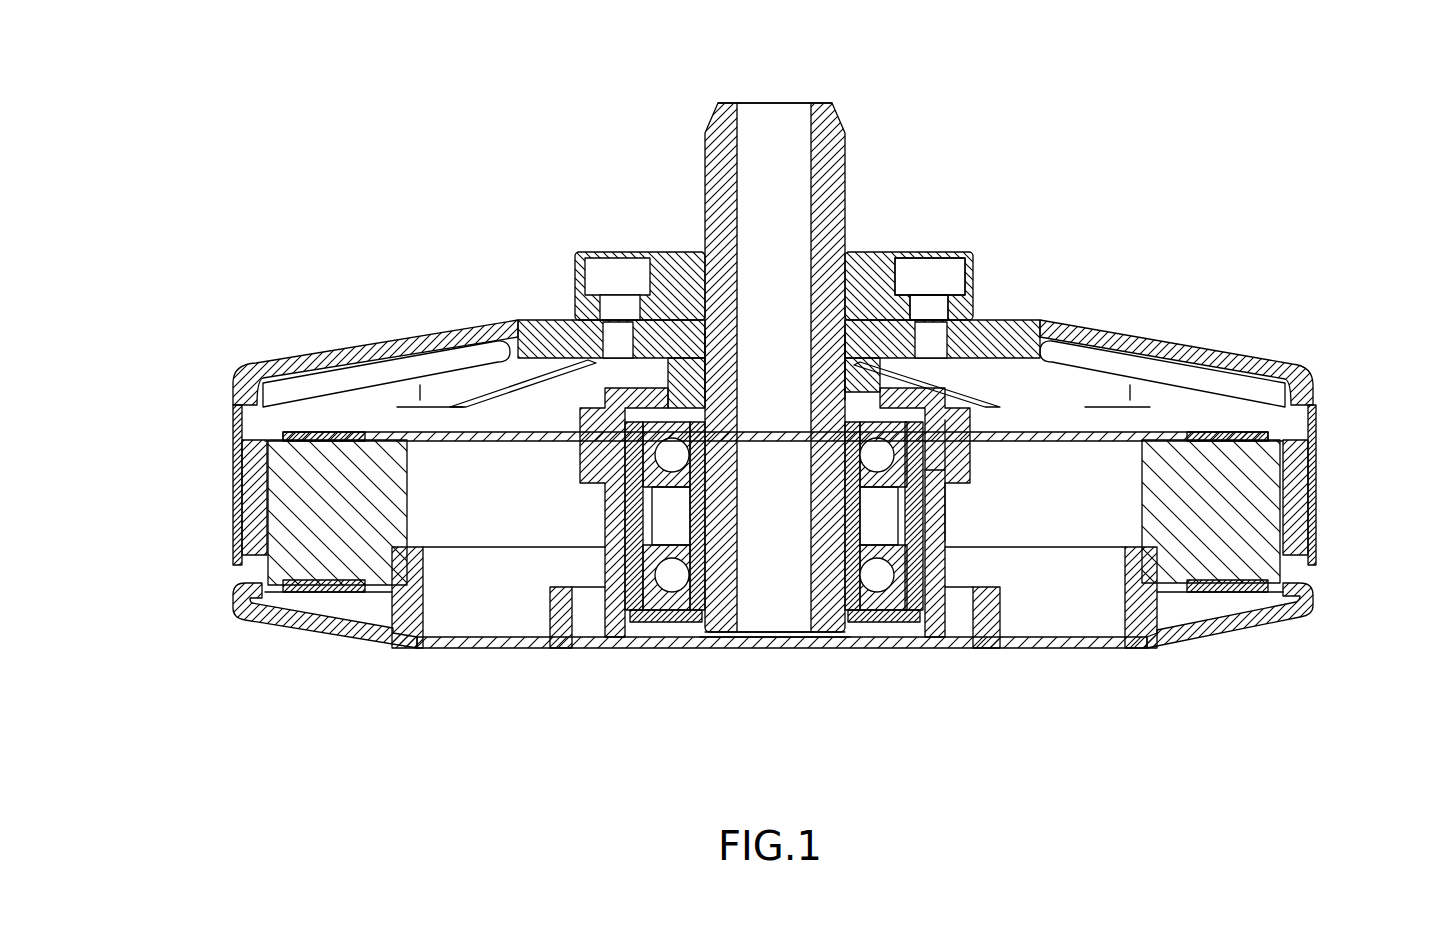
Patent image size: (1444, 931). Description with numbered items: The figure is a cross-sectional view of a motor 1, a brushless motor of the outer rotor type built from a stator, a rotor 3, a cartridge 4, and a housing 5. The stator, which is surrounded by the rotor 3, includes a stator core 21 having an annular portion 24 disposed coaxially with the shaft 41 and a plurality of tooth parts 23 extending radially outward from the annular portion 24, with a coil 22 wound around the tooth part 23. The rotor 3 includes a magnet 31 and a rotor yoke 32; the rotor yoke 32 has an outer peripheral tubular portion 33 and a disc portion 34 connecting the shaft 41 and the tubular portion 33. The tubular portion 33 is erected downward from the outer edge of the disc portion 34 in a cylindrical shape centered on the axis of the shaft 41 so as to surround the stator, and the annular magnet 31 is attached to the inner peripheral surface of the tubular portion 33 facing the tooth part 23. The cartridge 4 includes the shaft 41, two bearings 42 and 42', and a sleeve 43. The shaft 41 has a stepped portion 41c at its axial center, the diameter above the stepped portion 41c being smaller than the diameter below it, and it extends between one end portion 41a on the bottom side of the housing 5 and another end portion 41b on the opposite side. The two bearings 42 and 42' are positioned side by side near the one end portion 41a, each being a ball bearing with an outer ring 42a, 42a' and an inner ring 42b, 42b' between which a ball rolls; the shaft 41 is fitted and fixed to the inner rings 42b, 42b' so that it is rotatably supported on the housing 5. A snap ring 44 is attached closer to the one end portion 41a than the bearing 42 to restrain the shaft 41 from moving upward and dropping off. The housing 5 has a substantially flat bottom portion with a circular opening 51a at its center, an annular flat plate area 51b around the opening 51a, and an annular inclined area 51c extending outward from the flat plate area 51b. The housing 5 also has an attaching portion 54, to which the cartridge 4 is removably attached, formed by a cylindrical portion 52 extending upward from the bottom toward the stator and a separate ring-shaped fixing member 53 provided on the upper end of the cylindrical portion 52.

The motor 1 is at (1043, 106).
The rotor 3 is at (351, 311).
The cartridge 4 is at (665, 630).
The housing 5 is at (1117, 665).
The stator core 21 is at (1400, 467).
The coil 22 is at (1255, 413).
The tooth part 23 is at (1255, 484).
The annular portion 24 is at (1238, 600).
The magnet 31 is at (258, 500).
The rotor yoke 32 is at (140, 332).
The tubular portion 33 is at (242, 452).
The disc portion 34 is at (300, 359).
The shaft 41 is at (820, 157).
The one end portion 41a is at (770, 636).
The another end portion 41b is at (770, 102).
The stepped portion 41c is at (849, 393).
The bearing 42 is at (754, 494).
The bearing 42' is at (696, 306).
The outer ring 42a is at (944, 580).
The outer ring 42a' is at (977, 267).
The inner ring 42b is at (884, 580).
The inner ring 42b' is at (927, 306).
The sleeve 43 is at (612, 560).
The snap ring 44 is at (690, 624).
The opening 51a is at (853, 645).
The flat plate area 51b is at (1068, 650).
The inclined area 51c is at (305, 628).
The cylindrical portion 52 is at (948, 507).
The fixing member 53 is at (955, 483).
The attaching portion 54 is at (1118, 258).